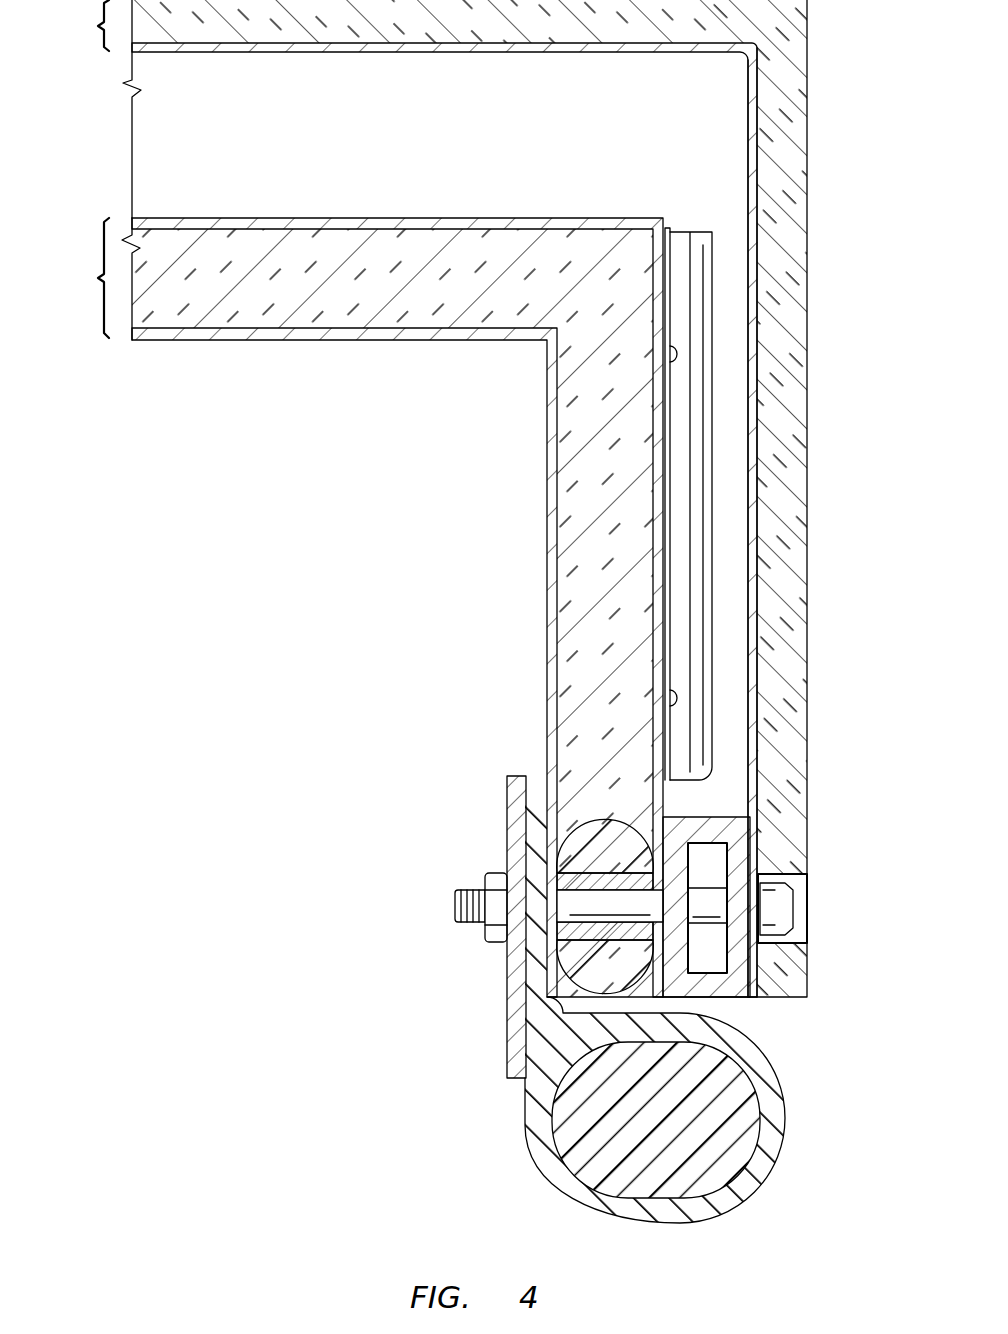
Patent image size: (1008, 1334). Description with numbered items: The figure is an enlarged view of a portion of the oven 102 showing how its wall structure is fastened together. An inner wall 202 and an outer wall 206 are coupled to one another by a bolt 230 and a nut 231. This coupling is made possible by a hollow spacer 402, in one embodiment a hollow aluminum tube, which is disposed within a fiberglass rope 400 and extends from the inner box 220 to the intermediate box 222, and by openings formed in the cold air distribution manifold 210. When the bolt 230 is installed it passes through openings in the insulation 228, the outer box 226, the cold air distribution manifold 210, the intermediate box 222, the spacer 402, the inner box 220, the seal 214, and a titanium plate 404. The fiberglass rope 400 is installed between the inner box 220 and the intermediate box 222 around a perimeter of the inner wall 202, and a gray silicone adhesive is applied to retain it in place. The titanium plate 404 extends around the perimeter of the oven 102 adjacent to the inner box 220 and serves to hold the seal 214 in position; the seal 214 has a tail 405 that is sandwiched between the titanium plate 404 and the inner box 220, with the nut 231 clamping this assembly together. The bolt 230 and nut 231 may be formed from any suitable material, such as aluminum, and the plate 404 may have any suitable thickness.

The oven 102 is at (231, 824).
The inner wall 202 is at (357, 579).
The outer wall 206 is at (404, 498).
The cold air distribution manifold 210 is at (740, 995).
The seal 214 is at (585, 1182).
The inner box 220 is at (331, 342).
The intermediate box 222 is at (407, 216).
The outer box 226 is at (748, 148).
The insulation 228 is at (810, 205).
The bolt 230 is at (455, 903).
The nut 231 is at (487, 935).
The fiberglass rope 400 is at (593, 828).
The spacer 402 is at (582, 876).
The titanium plate 404 is at (512, 1003).
The tail 405 is at (543, 810).